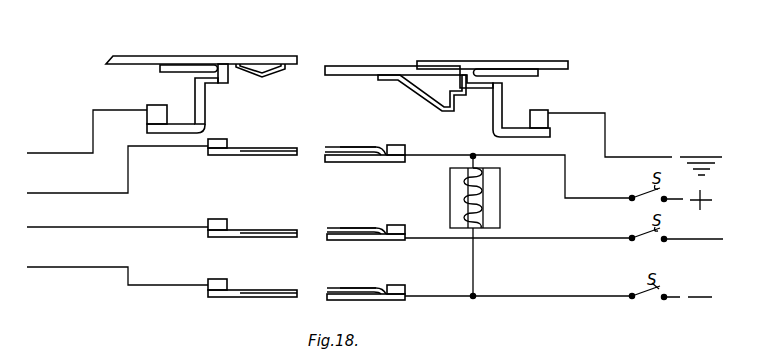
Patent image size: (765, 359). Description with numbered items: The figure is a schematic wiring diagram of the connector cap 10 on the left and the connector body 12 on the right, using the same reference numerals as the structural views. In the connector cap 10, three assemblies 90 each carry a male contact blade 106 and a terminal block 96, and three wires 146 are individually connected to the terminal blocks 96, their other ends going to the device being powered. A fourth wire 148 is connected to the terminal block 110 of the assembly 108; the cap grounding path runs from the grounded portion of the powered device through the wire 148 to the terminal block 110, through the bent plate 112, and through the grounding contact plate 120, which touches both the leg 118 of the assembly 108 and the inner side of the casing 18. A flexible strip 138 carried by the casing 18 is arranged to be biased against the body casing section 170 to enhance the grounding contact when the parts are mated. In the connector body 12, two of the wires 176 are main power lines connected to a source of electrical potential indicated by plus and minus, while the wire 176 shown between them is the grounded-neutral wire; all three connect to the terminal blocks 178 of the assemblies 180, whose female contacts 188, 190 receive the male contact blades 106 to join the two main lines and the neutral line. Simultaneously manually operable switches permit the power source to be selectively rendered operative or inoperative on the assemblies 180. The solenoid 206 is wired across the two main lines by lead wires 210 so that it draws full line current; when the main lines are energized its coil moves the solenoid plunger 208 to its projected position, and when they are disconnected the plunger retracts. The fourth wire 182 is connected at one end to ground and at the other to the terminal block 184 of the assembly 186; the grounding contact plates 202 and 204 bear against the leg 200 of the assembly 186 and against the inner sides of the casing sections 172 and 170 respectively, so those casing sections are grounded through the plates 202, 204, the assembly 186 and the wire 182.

The connector cap 10 is at (308, 31).
The connector body 12 is at (351, 48).
The casing 18 is at (233, 58).
The grounding contact plate 120 is at (170, 67).
The leg 118 is at (229, 81).
The flexible strip 138 is at (270, 75).
The bent plate 112 is at (206, 107).
The assembly 108 is at (175, 124).
The terminal block 110 is at (155, 105).
The fourth wire 148 is at (93, 131).
The wires 146 is at (129, 173).
The terminal blocks 96 is at (215, 140).
The assemblies 90 is at (238, 148).
The male contact blades 106 is at (266, 148).
The casing section 172 is at (560, 61).
The casing section 170 is at (367, 66).
The grounding contact plate 202 is at (492, 69).
The grounding contact plate 204 is at (416, 85).
The leg 200 is at (483, 88).
The assembly 186 is at (500, 117).
The terminal block 184 is at (542, 112).
The fourth wire 182 is at (592, 113).
The female contact 188 is at (335, 162).
The female contact 190 is at (337, 147).
The assemblies 180 is at (363, 147).
The terminal blocks 178 is at (400, 145).
The wires 176 is at (586, 199).
The lead wires 210 is at (475, 158).
The solenoid plunger 208 is at (468, 190).
The solenoid 206 is at (485, 182).